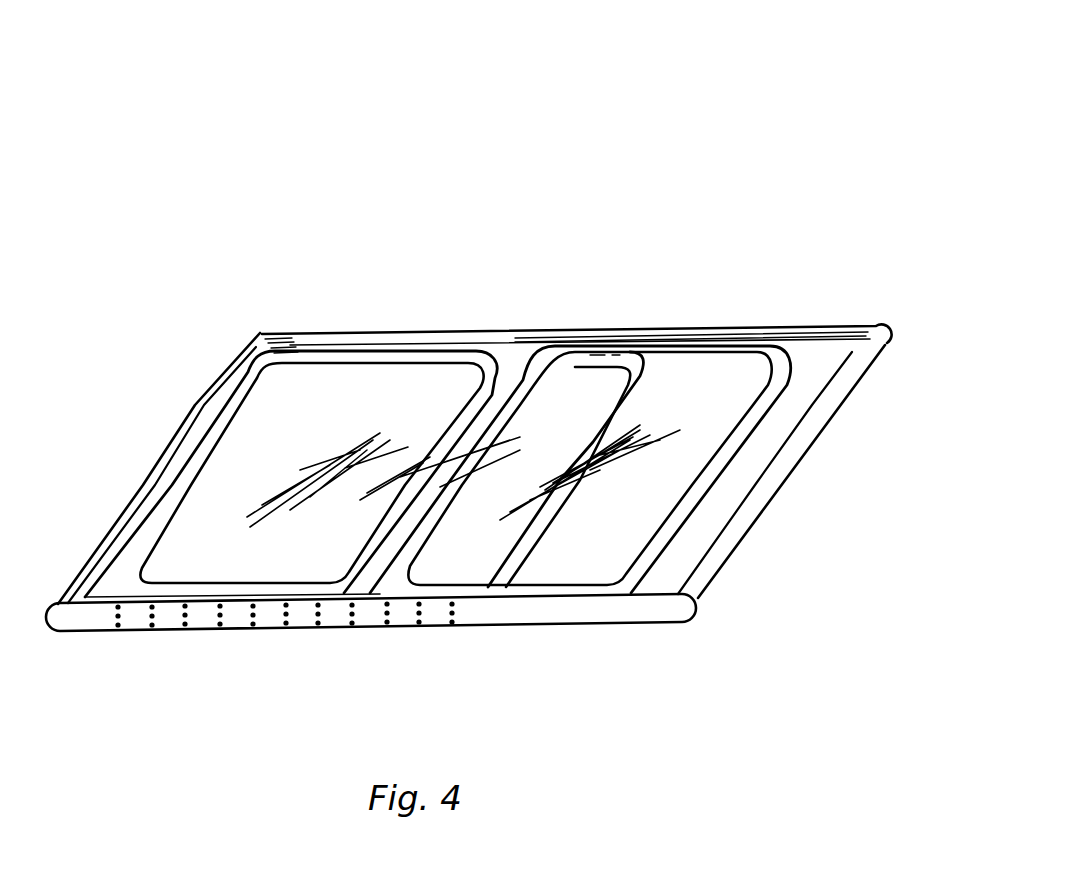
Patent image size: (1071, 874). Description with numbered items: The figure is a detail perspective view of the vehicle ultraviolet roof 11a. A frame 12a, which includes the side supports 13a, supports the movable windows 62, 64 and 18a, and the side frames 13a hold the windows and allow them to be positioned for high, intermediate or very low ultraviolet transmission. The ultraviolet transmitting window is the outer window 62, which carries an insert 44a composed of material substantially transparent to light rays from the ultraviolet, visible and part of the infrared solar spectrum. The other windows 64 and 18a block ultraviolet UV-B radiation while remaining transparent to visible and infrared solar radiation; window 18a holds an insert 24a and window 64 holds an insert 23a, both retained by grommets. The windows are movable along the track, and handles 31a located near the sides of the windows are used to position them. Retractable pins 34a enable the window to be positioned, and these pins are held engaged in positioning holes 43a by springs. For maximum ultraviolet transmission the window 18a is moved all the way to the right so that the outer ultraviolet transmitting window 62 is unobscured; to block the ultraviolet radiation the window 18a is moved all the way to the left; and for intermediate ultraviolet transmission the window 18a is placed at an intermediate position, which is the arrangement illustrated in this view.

The panel assembly 11a is at (604, 174).
The frame 12a is at (707, 595).
The side supports 13a is at (551, 327).
The window 18a is at (542, 532).
The insert 23a is at (713, 455).
The insert 24a is at (614, 425).
The handles 31a is at (458, 342).
The retractable pins 34a is at (415, 612).
The positioning holes 43a is at (154, 617).
The insert 44a is at (221, 426).
The outer window 62 is at (683, 525).
The window 64 is at (158, 470).